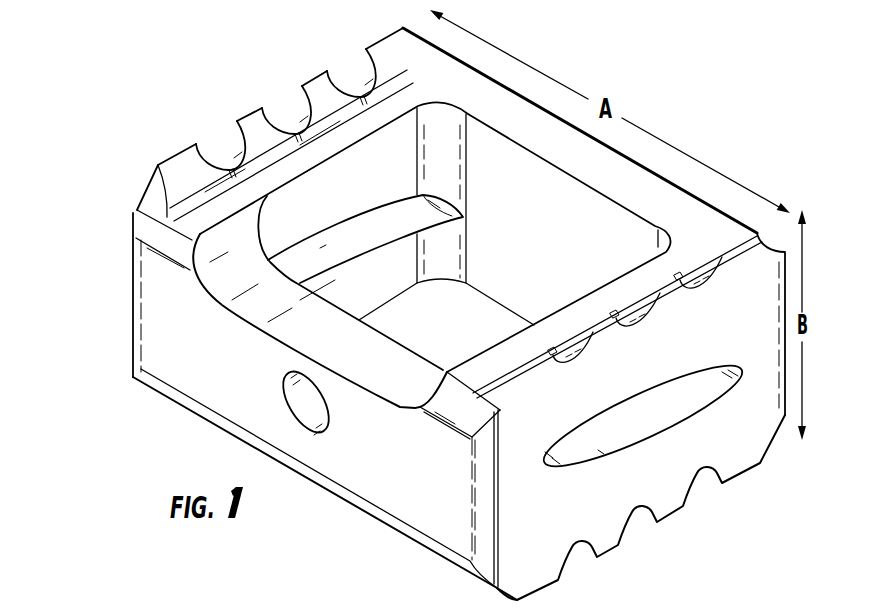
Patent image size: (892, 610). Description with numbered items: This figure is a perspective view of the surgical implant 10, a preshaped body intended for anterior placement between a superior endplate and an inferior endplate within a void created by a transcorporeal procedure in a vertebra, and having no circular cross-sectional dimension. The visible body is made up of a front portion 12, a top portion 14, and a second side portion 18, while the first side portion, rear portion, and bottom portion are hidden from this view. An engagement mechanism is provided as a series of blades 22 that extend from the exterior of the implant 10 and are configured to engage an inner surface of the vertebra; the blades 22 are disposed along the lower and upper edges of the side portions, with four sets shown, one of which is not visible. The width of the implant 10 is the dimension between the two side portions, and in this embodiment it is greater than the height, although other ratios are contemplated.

The surgical implant 10 is at (113, 136).
The front portion 12 is at (194, 354).
The top portion 14 is at (309, 331).
The second side portion 18 is at (682, 367).
The blades 22 is at (319, 90).